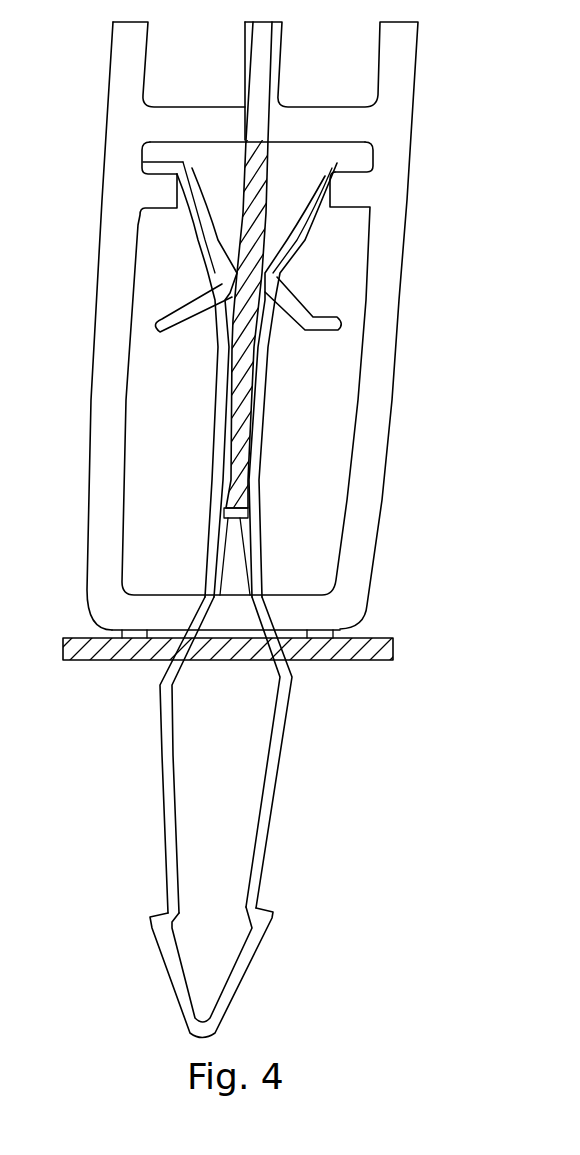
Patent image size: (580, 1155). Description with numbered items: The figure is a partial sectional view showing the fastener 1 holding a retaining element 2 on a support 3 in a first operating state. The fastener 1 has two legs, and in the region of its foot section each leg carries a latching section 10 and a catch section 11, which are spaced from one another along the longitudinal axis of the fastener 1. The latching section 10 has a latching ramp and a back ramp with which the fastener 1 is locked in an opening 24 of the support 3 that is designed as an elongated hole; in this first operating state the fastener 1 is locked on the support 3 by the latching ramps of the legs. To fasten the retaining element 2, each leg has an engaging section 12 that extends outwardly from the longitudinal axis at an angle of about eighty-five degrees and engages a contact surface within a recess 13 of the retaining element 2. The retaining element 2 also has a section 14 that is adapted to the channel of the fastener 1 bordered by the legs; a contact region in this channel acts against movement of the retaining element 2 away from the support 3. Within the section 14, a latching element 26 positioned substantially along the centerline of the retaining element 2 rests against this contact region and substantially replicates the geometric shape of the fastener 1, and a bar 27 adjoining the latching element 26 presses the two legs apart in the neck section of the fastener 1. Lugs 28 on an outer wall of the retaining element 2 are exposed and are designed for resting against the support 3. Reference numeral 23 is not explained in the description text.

The fastener 1 is at (313, 408).
The retaining element 2 is at (397, 245).
The support 3 is at (376, 660).
The latching section 10 is at (173, 627).
The catch section 11 is at (143, 903).
The engaging section 12 is at (142, 170).
The recesses 13 is at (157, 150).
The section 14 is at (217, 427).
The spring arms 23 is at (153, 322).
The opening 24 is at (217, 660).
The latching element 26 is at (243, 303).
The bar 27 is at (262, 452).
The lugs 28 is at (118, 660).